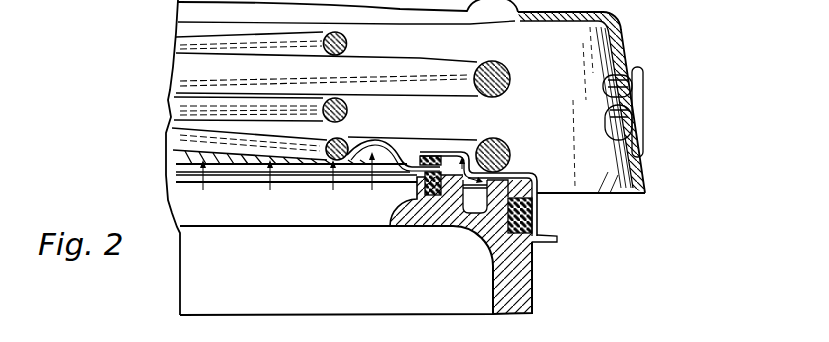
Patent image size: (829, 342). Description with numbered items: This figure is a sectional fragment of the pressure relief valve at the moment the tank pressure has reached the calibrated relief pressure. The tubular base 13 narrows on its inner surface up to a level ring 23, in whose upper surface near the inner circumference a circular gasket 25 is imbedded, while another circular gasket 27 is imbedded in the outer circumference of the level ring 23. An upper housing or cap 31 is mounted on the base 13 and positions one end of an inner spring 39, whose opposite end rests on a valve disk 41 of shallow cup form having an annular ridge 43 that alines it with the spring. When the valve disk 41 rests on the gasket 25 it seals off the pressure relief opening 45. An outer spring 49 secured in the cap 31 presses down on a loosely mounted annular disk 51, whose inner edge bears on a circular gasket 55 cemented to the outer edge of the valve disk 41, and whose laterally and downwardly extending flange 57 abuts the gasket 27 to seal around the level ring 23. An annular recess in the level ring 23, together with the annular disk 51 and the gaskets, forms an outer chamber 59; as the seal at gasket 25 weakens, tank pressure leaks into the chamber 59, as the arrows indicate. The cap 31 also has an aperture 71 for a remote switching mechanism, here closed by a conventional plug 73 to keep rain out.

The tubular base 13 is at (497, 284).
The level ring 23 is at (409, 214).
The circular gasket 25 is at (424, 186).
The circular gasket 27 is at (540, 229).
The upper housing or cap 31 is at (620, 38).
The inner spring 39 is at (348, 111).
The valve disk 41 is at (183, 152).
The annular ridge 43 is at (382, 141).
The pressure relief opening 45 is at (268, 186).
The outer spring 49 is at (509, 69).
The annular disk 51 is at (513, 172).
The circular gasket 55 is at (436, 160).
The flange 57 is at (536, 216).
The outer chamber 59 is at (463, 212).
The aperture 71 is at (623, 145).
The plug 73 is at (634, 86).